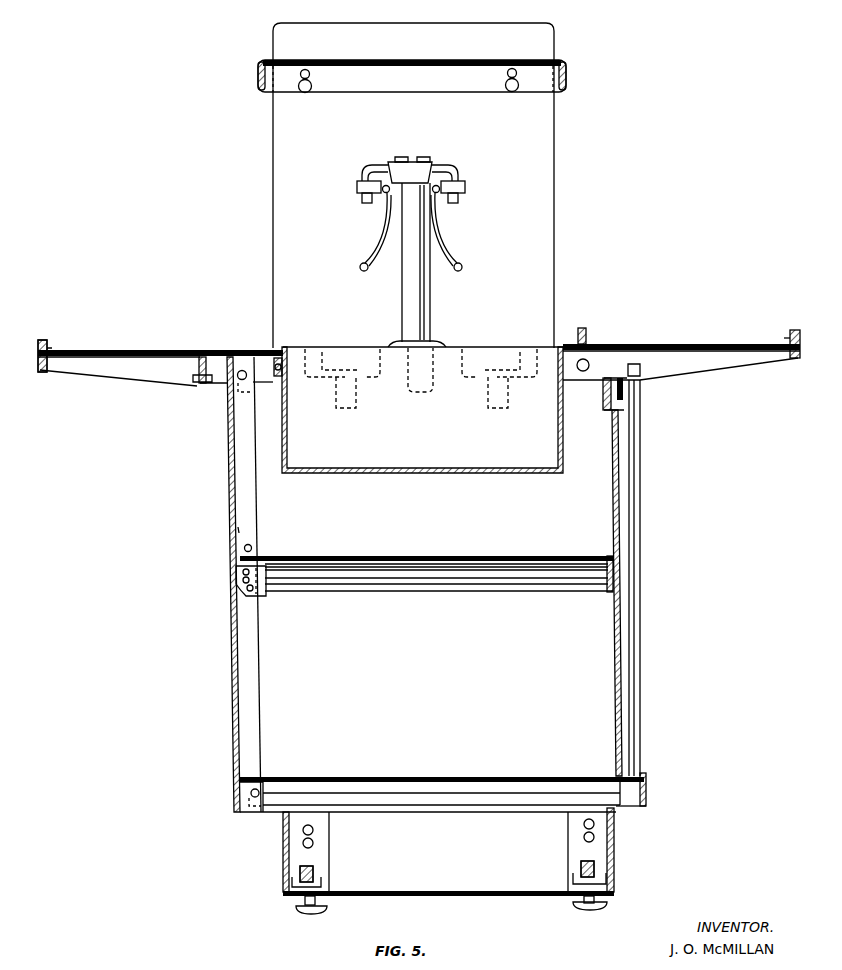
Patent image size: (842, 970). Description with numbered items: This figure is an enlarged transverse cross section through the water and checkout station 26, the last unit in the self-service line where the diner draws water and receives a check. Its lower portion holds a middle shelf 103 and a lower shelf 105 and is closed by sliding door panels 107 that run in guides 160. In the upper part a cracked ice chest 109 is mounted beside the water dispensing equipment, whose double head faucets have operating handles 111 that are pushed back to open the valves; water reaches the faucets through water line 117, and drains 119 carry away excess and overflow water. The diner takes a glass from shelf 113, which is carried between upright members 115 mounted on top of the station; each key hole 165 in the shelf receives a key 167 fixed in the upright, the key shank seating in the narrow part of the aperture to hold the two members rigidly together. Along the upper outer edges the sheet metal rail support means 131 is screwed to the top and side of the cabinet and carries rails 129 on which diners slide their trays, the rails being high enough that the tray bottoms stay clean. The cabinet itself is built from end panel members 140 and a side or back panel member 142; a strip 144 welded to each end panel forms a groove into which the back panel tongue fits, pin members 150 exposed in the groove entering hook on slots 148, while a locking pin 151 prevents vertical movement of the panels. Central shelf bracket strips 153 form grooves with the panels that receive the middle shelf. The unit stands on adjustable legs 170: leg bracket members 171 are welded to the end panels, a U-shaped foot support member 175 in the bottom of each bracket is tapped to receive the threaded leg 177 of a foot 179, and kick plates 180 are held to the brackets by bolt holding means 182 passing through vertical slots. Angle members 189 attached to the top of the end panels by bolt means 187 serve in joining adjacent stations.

The water and checkout station 26 is at (641, 470).
The middle shelf 103 is at (424, 562).
The lower shelf 105 is at (478, 822).
The sliding door panels 107 is at (630, 538).
The cracked ice chest 109 is at (432, 473).
The operating handles 111 is at (373, 253).
The shelf 113 is at (414, 60).
The upright members 115 is at (535, 137).
The water line 117 is at (430, 283).
The drains 119 is at (343, 395).
The rails 129 is at (45, 341).
The rail support means 131 is at (115, 350).
The end panel members 140 is at (460, 664).
The side or back panel member 142 is at (236, 655).
The strip 144 is at (240, 528).
The hook on slots 148 is at (230, 412).
The pin members 150 is at (236, 390).
The locking pin 151 is at (253, 548).
The central shelf bracket strips 153 is at (240, 580).
The guides 160 is at (604, 408).
The key hole 165 is at (311, 90).
The key 167 is at (305, 69).
The legs 170 is at (333, 867).
The leg bracket members 171 is at (293, 838).
The foot support member 175 is at (298, 888).
The threaded leg 177 is at (300, 871).
The foot 179 is at (298, 908).
The kick plates 180 is at (462, 854).
The bolt holding means 182 is at (313, 838).
The bolt means 187 is at (281, 353).
The angle members 189 is at (561, 349).